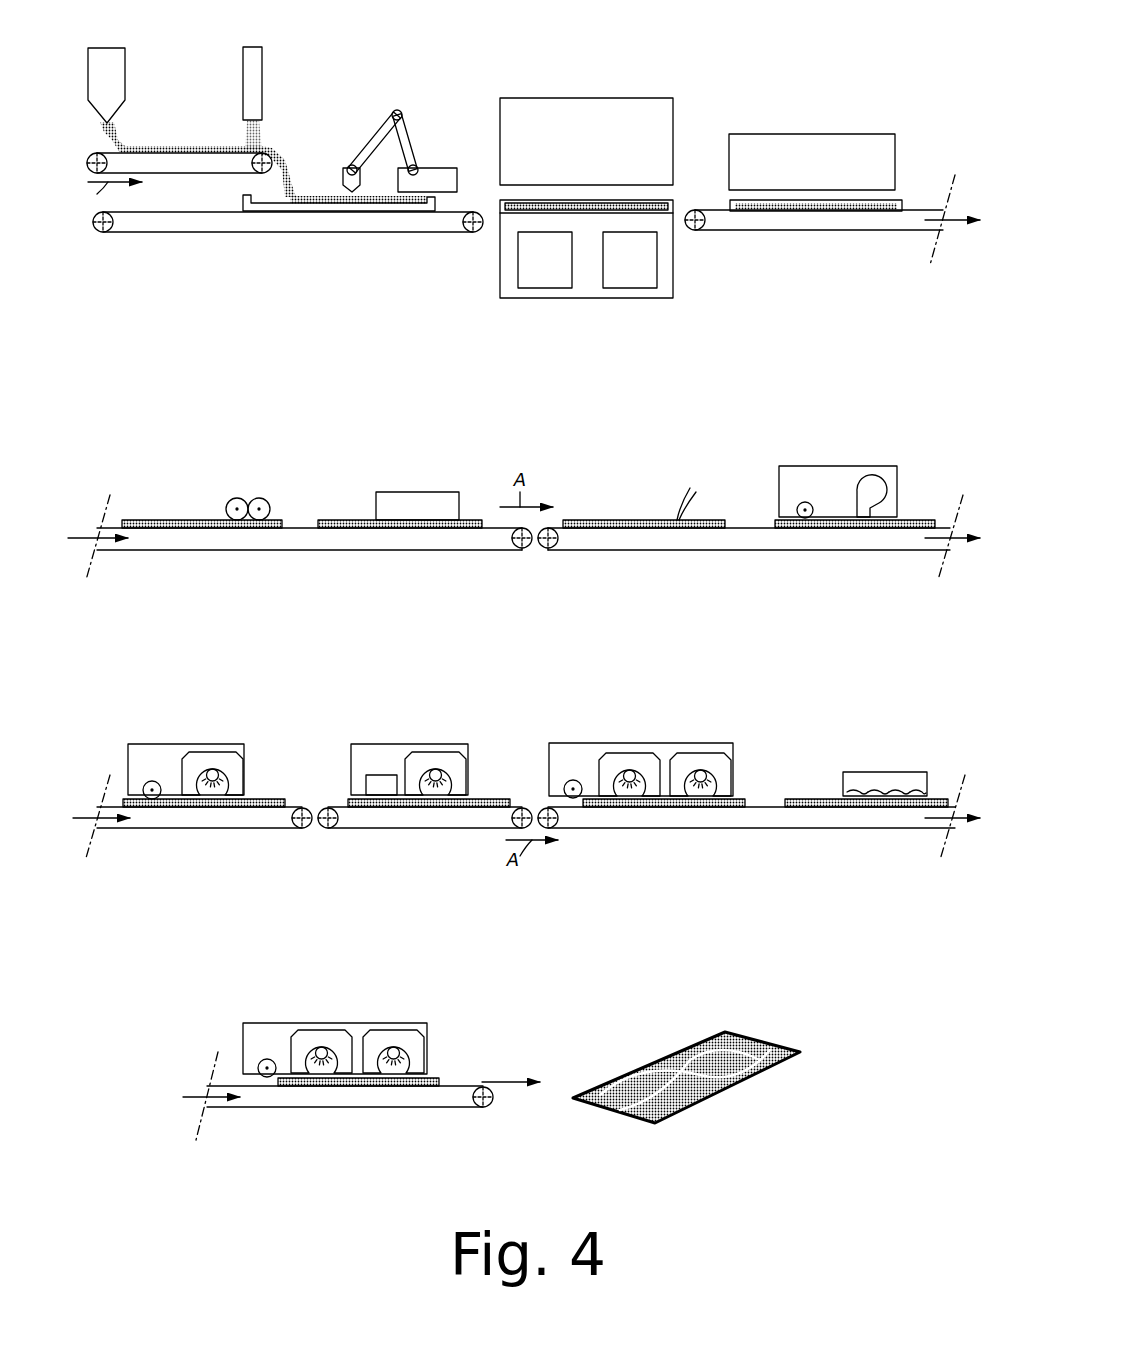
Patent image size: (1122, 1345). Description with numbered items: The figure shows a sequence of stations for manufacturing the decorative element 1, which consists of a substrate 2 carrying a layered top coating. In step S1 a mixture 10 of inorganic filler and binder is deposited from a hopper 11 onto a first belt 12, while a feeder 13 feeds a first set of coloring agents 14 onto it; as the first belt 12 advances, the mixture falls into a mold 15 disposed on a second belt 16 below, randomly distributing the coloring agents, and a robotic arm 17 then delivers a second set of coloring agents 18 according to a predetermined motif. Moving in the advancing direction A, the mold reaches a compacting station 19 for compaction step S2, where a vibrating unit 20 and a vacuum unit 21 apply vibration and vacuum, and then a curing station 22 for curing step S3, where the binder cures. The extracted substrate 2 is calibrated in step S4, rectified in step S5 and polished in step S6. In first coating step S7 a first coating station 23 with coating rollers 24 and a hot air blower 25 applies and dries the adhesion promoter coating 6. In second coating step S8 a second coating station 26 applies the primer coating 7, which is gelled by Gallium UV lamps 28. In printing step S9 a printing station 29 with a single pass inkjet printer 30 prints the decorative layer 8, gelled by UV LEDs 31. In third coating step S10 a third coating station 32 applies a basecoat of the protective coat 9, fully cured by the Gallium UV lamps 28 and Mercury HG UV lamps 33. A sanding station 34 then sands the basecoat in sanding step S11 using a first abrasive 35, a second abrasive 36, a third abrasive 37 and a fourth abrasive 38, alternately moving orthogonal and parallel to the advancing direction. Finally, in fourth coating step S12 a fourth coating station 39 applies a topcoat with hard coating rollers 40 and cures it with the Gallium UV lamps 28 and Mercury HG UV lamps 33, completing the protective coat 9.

The decorative element 1 is at (632, 1050).
The substrate 2 is at (184, 527).
The adhesion promoter coating 6 is at (906, 519).
The primer coating 7 is at (262, 799).
The decorative layer 8 is at (486, 799).
The protective coat 9 is at (740, 799).
The mixture 10 is at (126, 140).
The hopper 11 is at (112, 52).
The first belt 12 is at (212, 172).
The feeder 13 is at (263, 50).
The first set of coloring agents 14 is at (263, 136).
The mold 15 is at (284, 206).
The second belt 16 is at (358, 236).
The robotic arm 17 is at (382, 134).
The second set of coloring agents 18 is at (340, 186).
The compacting station 19 is at (676, 266).
The vibrating unit 20 is at (541, 275).
The vacuum unit 21 is at (640, 275).
The curing station 22 is at (760, 145).
The first coating station 23 is at (898, 478).
The coating rollers 24 is at (808, 500).
The hot air blower 25 is at (872, 478).
The second coating station 26 is at (246, 753).
The Gallium UV lamps 28 is at (212, 758).
The printing station 29 is at (470, 753).
The single pass inkjet printer 30 is at (378, 777).
The UV LEDs 31 is at (432, 758).
The third coating station 32 is at (735, 768).
The Mercury HG UV lamps 33 is at (695, 760).
The sanding station 34 is at (843, 782).
The first abrasive 35 is at (853, 793).
The second abrasive 36 is at (869, 793).
The third abrasive 37 is at (889, 793).
The fourth abrasive 38 is at (912, 793).
The fourth coating station 39 is at (428, 1047).
The coating rollers 40 is at (268, 1058).
The mixture providing step S1 is at (392, 62).
The compaction step S2 is at (603, 83).
The curing step S3 is at (850, 108).
The calibration step S4 is at (178, 490).
The rectification step S5 is at (427, 480).
The polishing step S6 is at (638, 490).
The first coating step S7 is at (793, 452).
The second coating step S8 is at (135, 718).
The printing step S9 is at (360, 718).
The third coating step S10 is at (575, 698).
The sanding step S11 is at (845, 738).
The fourth coating step S12 is at (270, 978).